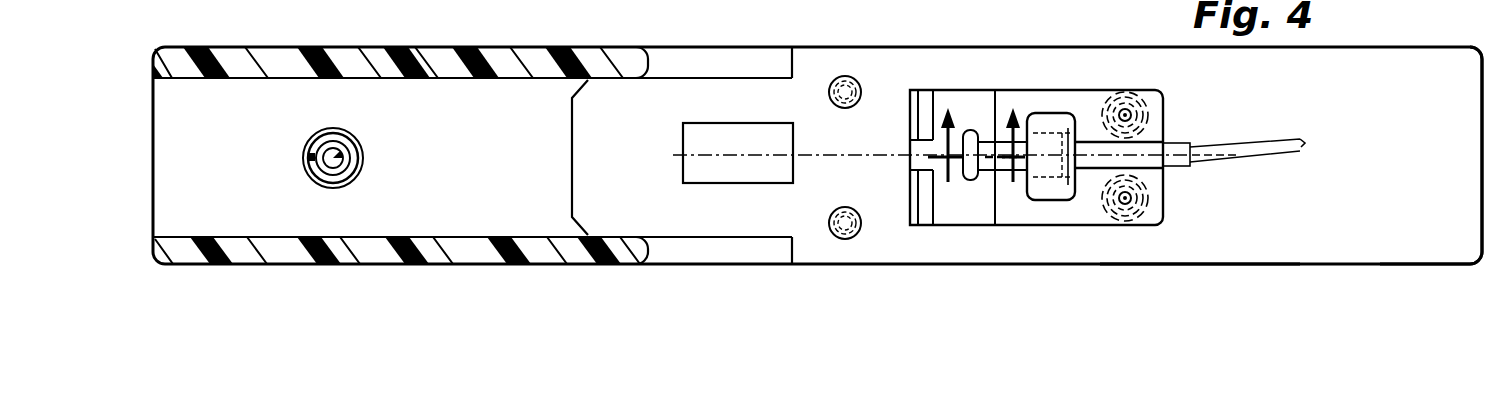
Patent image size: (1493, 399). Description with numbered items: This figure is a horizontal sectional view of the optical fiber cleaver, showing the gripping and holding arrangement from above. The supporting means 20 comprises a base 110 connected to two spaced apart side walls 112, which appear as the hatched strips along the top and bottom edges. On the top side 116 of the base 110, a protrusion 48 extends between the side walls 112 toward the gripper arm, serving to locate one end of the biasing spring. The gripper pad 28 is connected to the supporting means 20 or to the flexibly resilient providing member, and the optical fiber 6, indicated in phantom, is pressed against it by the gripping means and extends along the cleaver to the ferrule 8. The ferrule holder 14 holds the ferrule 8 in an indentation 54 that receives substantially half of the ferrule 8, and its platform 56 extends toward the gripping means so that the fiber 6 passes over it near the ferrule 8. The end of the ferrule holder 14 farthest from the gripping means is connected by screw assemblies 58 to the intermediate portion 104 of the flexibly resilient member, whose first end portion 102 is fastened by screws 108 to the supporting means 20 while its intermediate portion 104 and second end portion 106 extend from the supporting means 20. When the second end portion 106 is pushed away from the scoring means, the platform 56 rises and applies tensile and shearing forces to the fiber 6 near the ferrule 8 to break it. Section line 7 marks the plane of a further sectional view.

The supporting means 20 is at (572, 294).
The side walls 112 is at (362, 47).
The top side of the base 116 is at (226, 137).
The base 110 is at (534, 160).
The protrusion 48 is at (342, 150).
The gripper pad 28 is at (749, 123).
The optical fiber 6 is at (836, 150).
The first end portion 102 is at (814, 268).
The screws 108 is at (843, 76).
The ferrule holder 14 is at (1006, 84).
The platform 56 is at (910, 147).
The section line 7- 7 is at (976, 163).
The indentation 54 is at (1062, 114).
The ferrule 8 is at (1172, 144).
The screw assemblies 58 is at (1145, 112).
The intermediate portion 104 is at (1142, 266).
The second end portion 106 is at (1392, 266).